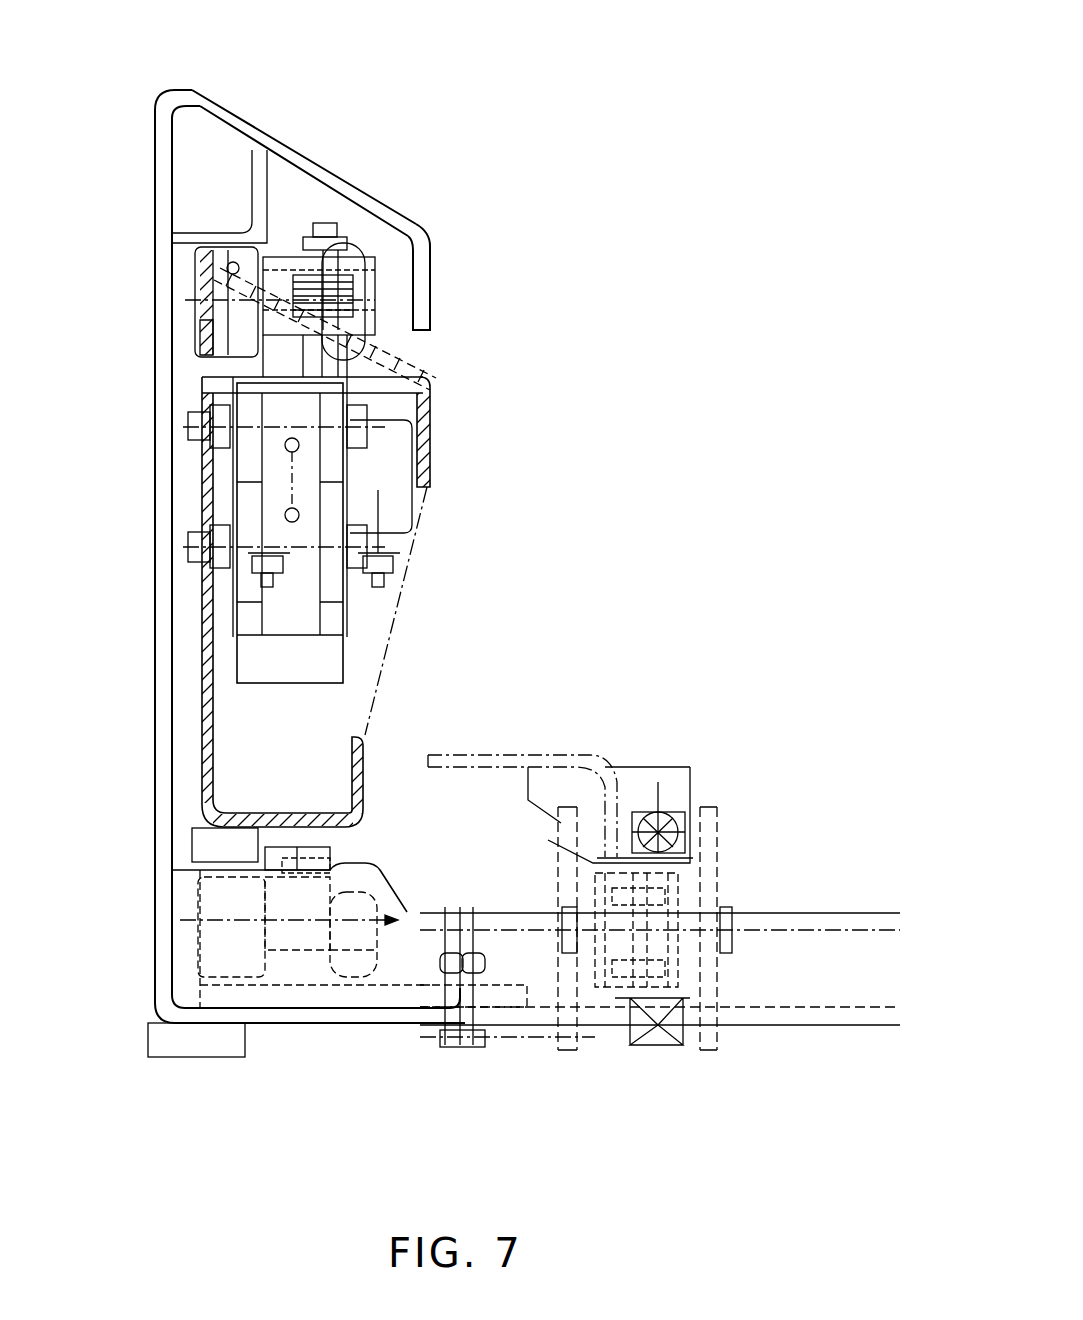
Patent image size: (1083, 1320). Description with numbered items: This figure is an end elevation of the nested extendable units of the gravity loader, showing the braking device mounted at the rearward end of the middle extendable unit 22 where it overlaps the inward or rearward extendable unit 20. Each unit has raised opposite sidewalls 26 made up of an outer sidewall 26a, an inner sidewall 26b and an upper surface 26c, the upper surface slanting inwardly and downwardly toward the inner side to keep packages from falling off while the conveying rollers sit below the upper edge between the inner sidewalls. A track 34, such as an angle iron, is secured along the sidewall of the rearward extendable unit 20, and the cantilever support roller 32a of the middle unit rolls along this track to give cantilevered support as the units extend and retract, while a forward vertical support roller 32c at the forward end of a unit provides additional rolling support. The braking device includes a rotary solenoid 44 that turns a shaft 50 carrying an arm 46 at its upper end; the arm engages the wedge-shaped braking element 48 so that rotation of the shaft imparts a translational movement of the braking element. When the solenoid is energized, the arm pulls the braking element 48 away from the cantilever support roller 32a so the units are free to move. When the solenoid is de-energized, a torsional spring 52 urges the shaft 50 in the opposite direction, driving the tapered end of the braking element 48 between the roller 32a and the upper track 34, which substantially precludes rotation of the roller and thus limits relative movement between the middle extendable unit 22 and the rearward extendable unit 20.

The extendable unit 20 is at (245, 90).
The middle extendable unit 22 is at (455, 412).
The sidewalls 26 is at (178, 84).
The outer sidewall 26a is at (158, 310).
The inner sidewall 26b is at (432, 246).
The upper surface 26c is at (267, 140).
The cantilever support roller 32a is at (227, 345).
The forward vertical support roller 32c is at (213, 897).
The track 34 is at (227, 227).
The rotary solenoid 44 is at (402, 497).
The arm 46 is at (283, 260).
The braking element 48 is at (215, 261).
The shaft 50 is at (340, 362).
The torsional spring 52 is at (370, 292).